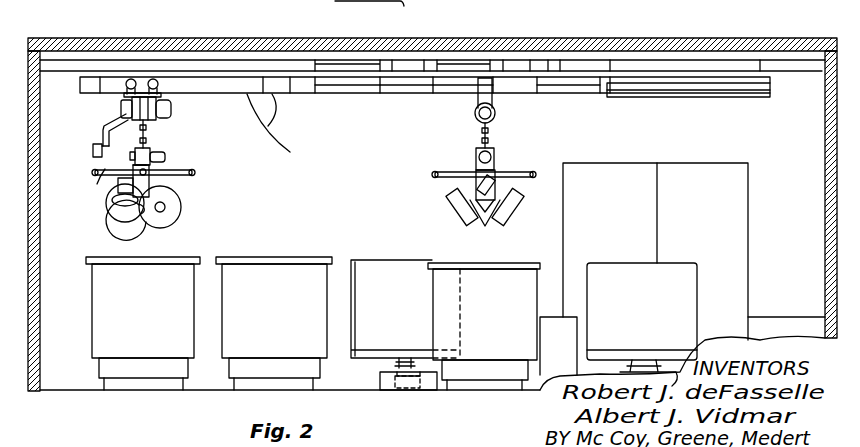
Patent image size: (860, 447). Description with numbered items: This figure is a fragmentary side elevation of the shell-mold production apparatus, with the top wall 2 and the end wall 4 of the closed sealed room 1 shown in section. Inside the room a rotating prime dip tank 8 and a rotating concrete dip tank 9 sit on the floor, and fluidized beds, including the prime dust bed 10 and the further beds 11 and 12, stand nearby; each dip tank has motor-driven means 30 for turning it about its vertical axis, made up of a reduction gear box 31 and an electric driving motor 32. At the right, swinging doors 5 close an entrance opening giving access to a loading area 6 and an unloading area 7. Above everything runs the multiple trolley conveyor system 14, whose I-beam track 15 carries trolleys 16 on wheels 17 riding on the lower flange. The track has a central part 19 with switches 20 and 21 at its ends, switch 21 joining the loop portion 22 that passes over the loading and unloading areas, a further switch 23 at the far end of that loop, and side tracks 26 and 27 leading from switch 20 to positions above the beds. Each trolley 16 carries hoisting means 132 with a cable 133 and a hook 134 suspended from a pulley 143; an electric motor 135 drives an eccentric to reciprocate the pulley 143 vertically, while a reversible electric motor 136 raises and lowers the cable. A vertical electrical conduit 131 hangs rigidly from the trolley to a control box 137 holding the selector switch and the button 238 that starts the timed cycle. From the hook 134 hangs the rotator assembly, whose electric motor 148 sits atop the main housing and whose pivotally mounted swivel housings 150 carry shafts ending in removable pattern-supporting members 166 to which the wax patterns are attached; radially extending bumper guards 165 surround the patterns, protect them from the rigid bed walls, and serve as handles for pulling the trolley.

The closed sealed room 1 is at (300, 33).
The top wall 2 is at (612, 42).
The end wall 4 is at (42, 268).
The swinging doors 5 is at (667, 177).
The loading area 6 is at (791, 320).
The unloading area 7 is at (545, 318).
The prime dip tank 8 is at (690, 262).
The concrete dip tank 9 is at (380, 262).
The prime dust bed 10 is at (432, 311).
The fluidized bed 11 is at (270, 320).
The fluidized bed 12 is at (92, 335).
The multiple trolley conveyor system 14 is at (118, 99).
The I-beam track 15 is at (700, 102).
The trolley 16 is at (128, 80).
The wheels 17 is at (151, 80).
The central part of the track 19 is at (391, 95).
The switch 20 is at (328, 94).
The switch 21 is at (457, 96).
The loop portion 22 is at (658, 96).
The switch 23 is at (573, 96).
The side track 26 is at (282, 118).
The side track 27 is at (279, 129).
The motor-driven means 30 is at (407, 392).
The reduction gear box 31 is at (395, 377).
The electric driving motor 32 is at (425, 395).
The vertical electrical conduit 131 is at (125, 134).
The hoisting means 132 is at (168, 118).
The cable 133 is at (490, 128).
The hook 134 is at (482, 145).
The electric motor 135 is at (172, 108).
The reversible electric motor 136 is at (120, 114).
The control box 137 is at (92, 150).
The pulley 143 is at (147, 126).
The electric motor 148 is at (167, 157).
The swivel housings 150 is at (180, 190).
The bumper guards 165 is at (526, 158).
The pattern-supporting member 166 is at (486, 226).
The button 238 is at (75, 172).